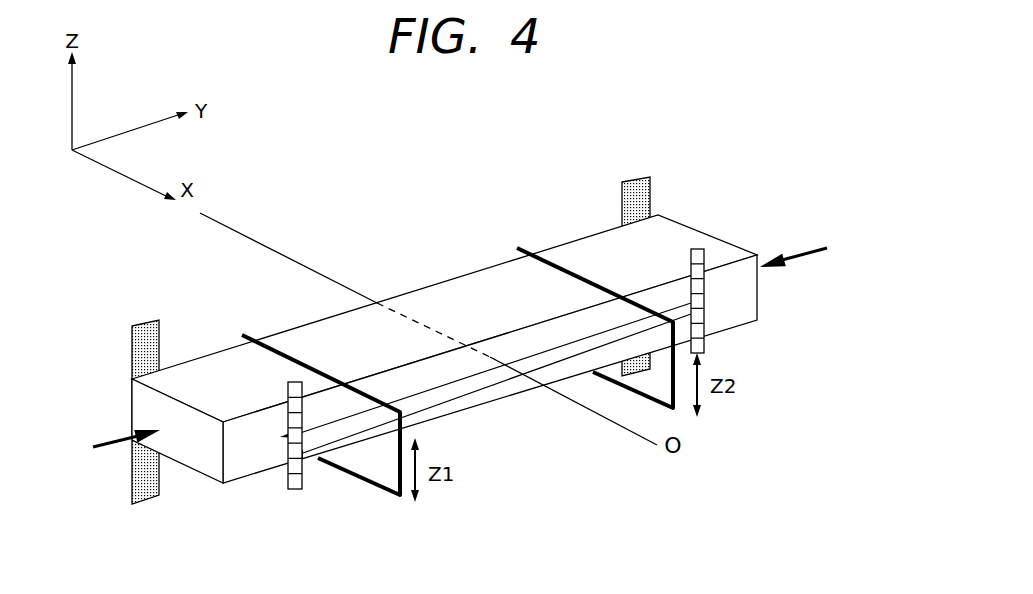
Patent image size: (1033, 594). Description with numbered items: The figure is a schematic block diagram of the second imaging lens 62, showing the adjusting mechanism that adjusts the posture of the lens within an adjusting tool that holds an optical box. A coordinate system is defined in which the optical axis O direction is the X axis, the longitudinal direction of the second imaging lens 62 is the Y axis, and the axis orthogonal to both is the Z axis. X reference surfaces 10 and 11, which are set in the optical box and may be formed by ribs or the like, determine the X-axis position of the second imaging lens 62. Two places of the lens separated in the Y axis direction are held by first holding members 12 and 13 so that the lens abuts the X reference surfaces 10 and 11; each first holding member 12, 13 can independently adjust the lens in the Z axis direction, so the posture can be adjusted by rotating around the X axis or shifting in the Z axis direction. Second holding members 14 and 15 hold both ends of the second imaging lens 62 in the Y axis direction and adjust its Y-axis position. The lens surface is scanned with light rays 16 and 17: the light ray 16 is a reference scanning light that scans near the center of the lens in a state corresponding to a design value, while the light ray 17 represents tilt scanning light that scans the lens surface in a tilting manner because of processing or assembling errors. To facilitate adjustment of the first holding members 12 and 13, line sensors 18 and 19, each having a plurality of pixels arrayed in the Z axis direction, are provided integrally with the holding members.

The X reference surface 10 is at (149, 322).
The X reference surface 11 is at (630, 178).
The first holding member 12 is at (285, 355).
The first holding member 13 is at (562, 255).
The second holding member 14 is at (110, 440).
The second holding member 15 is at (802, 250).
The light ray 16 is at (542, 355).
The light ray 17 is at (478, 390).
The line sensor 18 is at (293, 492).
The line sensor 19 is at (704, 348).
The second imaging lens 62 is at (698, 210).